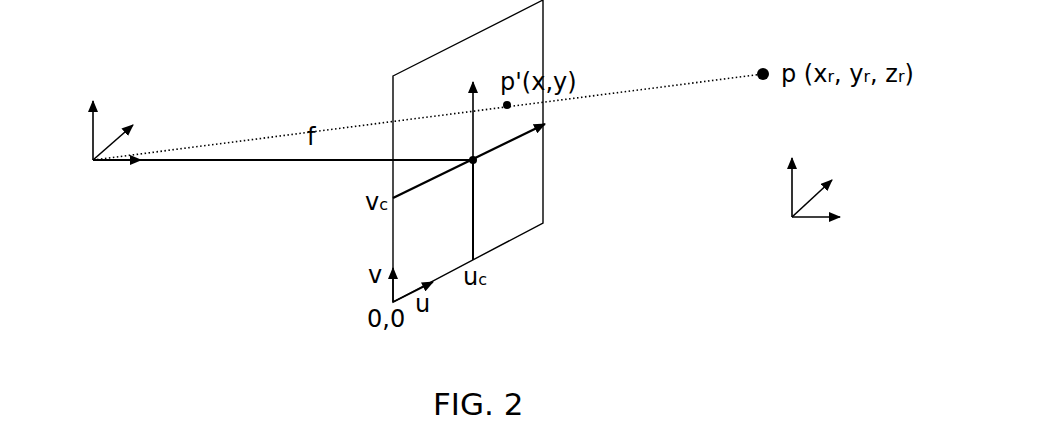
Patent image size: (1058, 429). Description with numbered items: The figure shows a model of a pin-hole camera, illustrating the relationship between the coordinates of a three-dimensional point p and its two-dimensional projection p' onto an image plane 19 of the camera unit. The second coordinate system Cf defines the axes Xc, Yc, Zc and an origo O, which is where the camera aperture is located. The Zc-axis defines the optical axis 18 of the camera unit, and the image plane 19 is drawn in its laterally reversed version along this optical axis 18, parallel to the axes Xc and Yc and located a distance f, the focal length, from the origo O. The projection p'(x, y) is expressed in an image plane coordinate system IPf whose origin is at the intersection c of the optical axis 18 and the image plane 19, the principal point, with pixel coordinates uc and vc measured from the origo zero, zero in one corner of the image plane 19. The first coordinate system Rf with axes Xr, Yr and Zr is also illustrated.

The optical axis 18 is at (279, 160).
The image plane 19 is at (529, 190).
The second coordinate system Cf is at (99, 137).
The image plane coordinate system IPf is at (469, 171).
The first coordinate system Rf is at (801, 188).